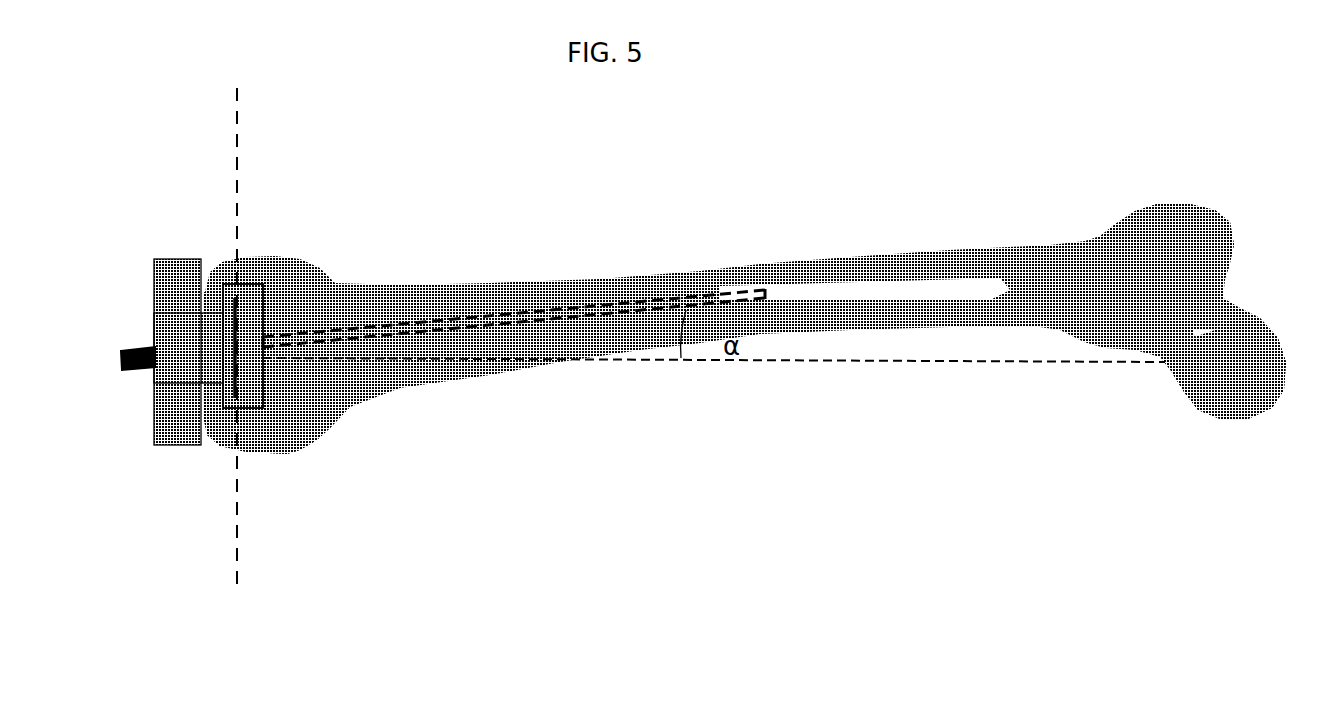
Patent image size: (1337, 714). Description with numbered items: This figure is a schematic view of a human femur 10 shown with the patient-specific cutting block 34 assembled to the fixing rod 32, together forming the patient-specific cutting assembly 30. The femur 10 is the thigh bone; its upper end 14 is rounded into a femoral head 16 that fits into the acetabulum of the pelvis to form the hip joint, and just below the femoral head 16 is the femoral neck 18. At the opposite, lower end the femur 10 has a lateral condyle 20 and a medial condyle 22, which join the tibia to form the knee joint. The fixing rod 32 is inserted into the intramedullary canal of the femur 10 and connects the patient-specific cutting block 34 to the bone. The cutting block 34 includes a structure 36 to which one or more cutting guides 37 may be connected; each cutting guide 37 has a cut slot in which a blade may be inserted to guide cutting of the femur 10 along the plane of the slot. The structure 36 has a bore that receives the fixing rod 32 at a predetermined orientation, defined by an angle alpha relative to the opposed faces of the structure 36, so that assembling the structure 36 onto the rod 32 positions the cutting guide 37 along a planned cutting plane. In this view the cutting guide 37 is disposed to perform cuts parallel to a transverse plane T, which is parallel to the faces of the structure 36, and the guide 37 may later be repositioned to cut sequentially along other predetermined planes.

The femur 10 is at (649, 248).
The upper end 14 is at (1188, 220).
The femoral head 16 is at (1262, 330).
The femoral neck 18 is at (1222, 298).
The lateral condyle 20 is at (230, 265).
The medial condyle 22 is at (268, 435).
The patient-specific cutting assembly 30 is at (242, 225).
The fixing rod 32 is at (407, 317).
The patient-specific cutting block 34 is at (168, 257).
The structure 36 is at (160, 287).
The cutting guide 37 is at (263, 358).